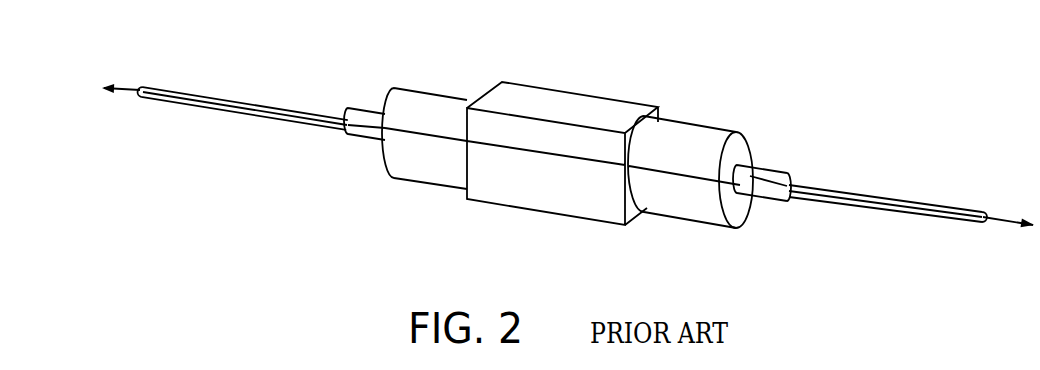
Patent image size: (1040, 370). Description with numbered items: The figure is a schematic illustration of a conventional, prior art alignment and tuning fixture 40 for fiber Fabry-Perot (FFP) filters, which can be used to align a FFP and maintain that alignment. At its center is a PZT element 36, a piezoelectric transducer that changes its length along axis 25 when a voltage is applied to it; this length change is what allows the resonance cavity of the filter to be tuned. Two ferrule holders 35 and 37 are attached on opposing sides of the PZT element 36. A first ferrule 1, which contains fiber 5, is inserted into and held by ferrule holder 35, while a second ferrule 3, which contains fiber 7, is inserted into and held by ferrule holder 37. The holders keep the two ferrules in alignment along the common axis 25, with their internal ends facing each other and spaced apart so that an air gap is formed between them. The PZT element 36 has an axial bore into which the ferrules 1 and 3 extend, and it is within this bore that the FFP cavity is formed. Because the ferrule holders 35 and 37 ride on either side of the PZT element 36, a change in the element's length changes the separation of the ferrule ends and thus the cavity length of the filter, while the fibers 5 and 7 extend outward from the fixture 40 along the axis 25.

The ferrule 1 is at (360, 112).
The ferrule 3 is at (763, 176).
The fiber 5 is at (297, 123).
The fiber 7 is at (863, 208).
The axis 25 is at (134, 90).
The ferrule holder 35 is at (420, 153).
The PZT element 36 is at (533, 190).
The ferrule holder 37 is at (676, 196).
The alignment and tuning fixture 40 is at (668, 90).